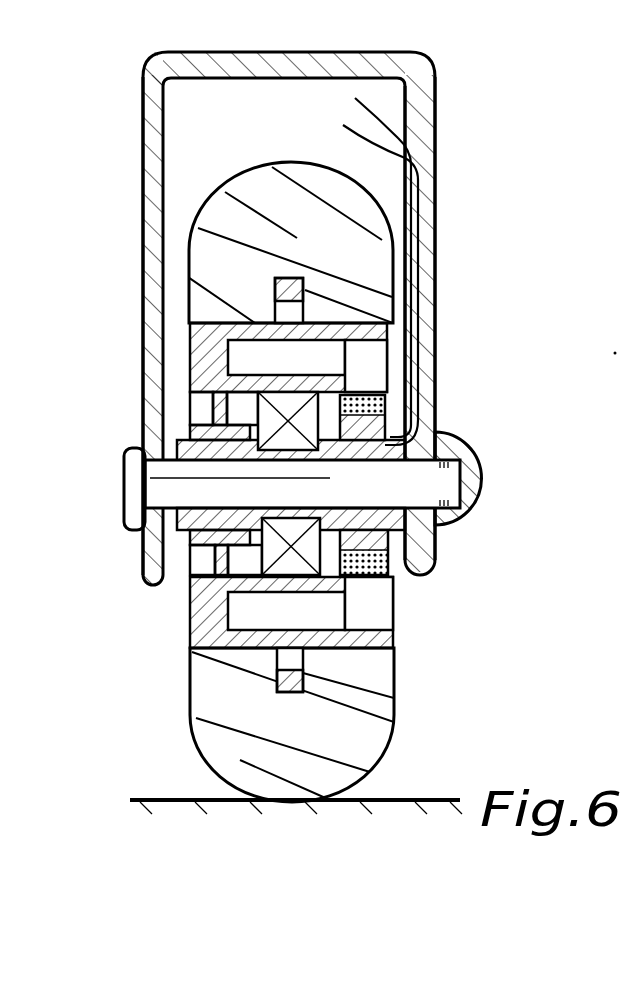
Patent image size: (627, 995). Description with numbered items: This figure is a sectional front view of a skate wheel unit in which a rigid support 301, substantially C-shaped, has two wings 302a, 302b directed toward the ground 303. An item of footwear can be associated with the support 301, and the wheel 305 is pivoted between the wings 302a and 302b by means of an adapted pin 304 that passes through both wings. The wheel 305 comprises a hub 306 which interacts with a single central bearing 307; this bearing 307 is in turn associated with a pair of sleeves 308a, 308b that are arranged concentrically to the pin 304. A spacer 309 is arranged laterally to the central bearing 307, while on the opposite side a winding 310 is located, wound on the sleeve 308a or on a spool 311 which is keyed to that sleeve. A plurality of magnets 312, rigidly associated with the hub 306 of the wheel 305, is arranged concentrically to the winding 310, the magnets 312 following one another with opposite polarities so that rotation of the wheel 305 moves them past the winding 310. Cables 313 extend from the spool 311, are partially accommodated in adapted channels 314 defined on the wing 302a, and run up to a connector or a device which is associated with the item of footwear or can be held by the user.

The rigid support 301 is at (294, 316).
The wing 302a is at (435, 125).
The wing 302b is at (145, 188).
The ground 303 is at (405, 800).
The pin 304 is at (457, 495).
The wheel 305 is at (248, 190).
The hub 306 is at (276, 338).
The central bearing 307 is at (265, 593).
The sleeve 308a is at (432, 450).
The sleeve 308b is at (175, 438).
The spacer 309 is at (200, 563).
The winding 310 is at (385, 405).
The spool 311 is at (400, 546).
The magnets 312 is at (368, 368).
The cables 313 is at (383, 125).
The channels 314 is at (436, 229).